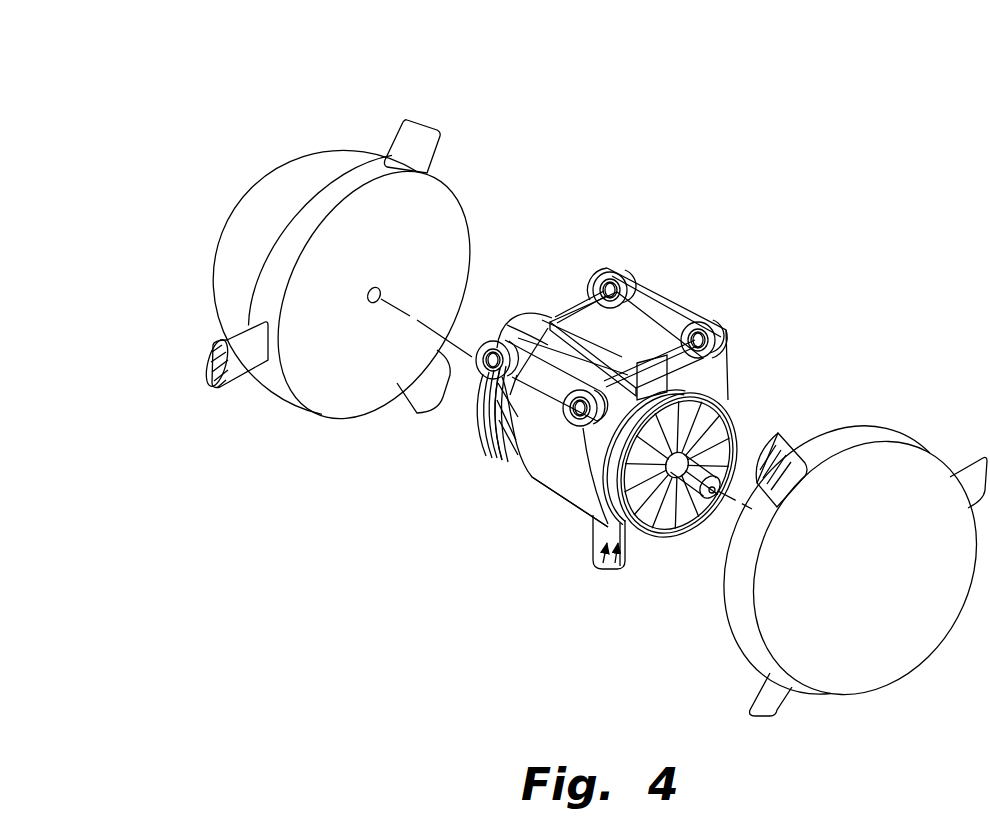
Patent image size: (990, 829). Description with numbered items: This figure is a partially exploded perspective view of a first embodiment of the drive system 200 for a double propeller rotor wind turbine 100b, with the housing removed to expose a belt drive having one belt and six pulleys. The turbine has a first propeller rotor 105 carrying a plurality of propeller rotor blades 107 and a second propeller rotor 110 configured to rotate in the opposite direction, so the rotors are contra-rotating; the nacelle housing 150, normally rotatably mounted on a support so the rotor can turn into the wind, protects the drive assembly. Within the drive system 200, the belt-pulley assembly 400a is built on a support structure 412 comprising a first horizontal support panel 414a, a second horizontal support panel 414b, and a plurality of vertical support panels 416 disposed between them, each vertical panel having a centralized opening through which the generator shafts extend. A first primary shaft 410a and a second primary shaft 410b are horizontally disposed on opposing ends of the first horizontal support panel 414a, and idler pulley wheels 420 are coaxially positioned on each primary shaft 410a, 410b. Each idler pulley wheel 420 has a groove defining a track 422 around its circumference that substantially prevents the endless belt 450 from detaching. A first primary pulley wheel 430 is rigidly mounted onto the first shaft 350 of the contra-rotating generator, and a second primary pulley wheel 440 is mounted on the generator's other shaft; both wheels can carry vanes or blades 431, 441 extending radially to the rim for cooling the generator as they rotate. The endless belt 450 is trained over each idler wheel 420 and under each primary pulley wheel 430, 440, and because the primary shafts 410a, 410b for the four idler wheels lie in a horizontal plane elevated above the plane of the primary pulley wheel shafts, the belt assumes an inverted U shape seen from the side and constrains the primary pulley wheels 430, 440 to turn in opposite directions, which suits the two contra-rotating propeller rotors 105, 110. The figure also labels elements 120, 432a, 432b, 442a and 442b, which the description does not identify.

The double propeller rotor wind turbine 100b is at (336, 257).
The first propeller rotor 105 is at (902, 589).
The propeller rotor blades 107 is at (795, 450).
The second propeller rotor 110 is at (248, 150).
The tab 120 is at (432, 160).
The nacelle housing 150 is at (590, 538).
The drive system 200 is at (594, 393).
The first shaft 350 is at (692, 495).
The belt-pulley assembly 400a is at (594, 408).
The first primary shaft 410a is at (560, 318).
The second primary shaft 410b is at (720, 357).
The support structure 412 is at (587, 328).
The first horizontal support panel 414a is at (615, 348).
The second horizontal support panel 414b is at (550, 512).
The vertical support panels 416 is at (572, 300).
The idler pulley wheels 420 is at (610, 272).
The track 422 is at (632, 300).
The first primary pulley wheel 430 is at (671, 490).
The vanes or blades 431 is at (660, 515).
The wheel surface 432a is at (600, 565).
The wheel surface 432b is at (626, 568).
The second primary pulley wheel 440 is at (540, 318).
The vanes or blades 441 is at (497, 397).
The ring 442a is at (494, 474).
The ring 442b is at (480, 463).
The endless belt 450 is at (688, 298).